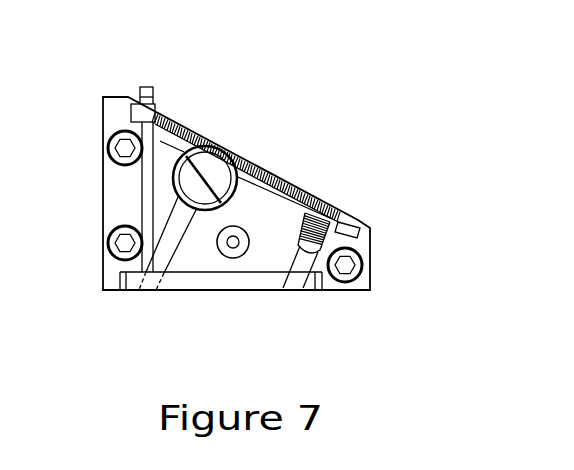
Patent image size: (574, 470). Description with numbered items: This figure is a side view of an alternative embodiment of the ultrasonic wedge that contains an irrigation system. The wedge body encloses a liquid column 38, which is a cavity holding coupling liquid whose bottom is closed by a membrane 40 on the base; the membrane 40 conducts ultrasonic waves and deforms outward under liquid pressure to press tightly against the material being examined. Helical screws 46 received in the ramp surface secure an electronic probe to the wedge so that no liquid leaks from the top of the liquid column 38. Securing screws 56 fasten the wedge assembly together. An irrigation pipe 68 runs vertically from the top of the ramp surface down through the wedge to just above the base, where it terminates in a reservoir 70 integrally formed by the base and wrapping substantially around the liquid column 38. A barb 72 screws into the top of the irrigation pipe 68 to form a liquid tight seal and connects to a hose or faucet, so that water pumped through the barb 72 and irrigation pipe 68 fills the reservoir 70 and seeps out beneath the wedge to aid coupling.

The liquid column 38 is at (188, 247).
The membrane 40 is at (205, 290).
The helical screw 46 is at (350, 217).
The securing screw 56 is at (124, 151).
The irrigation pipe 68 is at (145, 210).
The reservoir 70 is at (260, 278).
The barb 72 is at (157, 97).